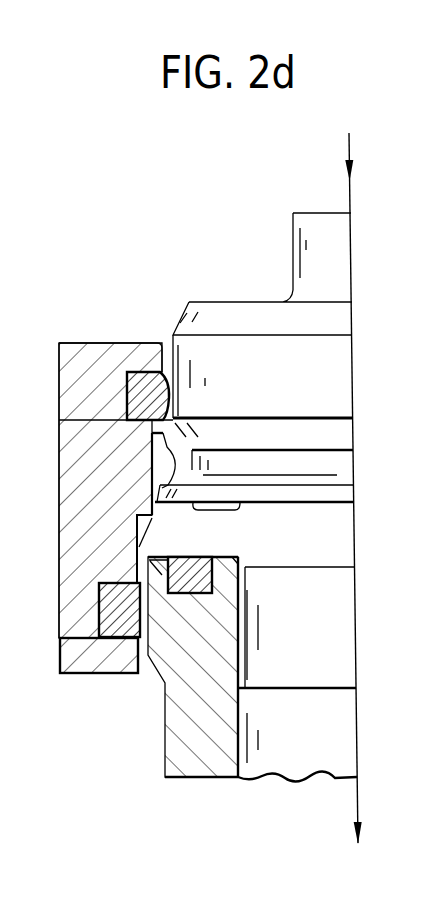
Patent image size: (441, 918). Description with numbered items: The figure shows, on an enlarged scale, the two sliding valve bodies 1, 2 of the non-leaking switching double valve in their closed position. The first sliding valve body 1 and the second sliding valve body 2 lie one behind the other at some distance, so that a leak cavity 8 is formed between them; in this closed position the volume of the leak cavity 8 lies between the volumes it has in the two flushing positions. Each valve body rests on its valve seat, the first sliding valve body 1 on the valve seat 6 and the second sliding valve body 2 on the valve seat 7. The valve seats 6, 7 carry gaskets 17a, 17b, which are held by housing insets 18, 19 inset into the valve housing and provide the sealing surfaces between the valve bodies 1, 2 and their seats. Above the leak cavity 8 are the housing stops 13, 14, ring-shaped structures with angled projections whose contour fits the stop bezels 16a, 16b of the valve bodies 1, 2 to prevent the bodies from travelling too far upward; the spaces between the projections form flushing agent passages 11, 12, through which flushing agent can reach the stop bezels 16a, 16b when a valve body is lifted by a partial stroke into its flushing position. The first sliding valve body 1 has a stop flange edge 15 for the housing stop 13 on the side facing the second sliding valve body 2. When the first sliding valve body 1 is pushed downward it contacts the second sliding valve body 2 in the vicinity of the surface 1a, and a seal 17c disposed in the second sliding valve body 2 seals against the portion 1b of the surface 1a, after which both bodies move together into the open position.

The first sliding valve body 1 is at (228, 383).
The surface 1a is at (137, 529).
The portion of surface 1b is at (150, 452).
The second sliding valve body 2 is at (205, 633).
The valve seat 6 is at (176, 443).
The valve seat 7 is at (165, 543).
The leak cavity 8 is at (298, 528).
The flushing agent passage 11 is at (177, 430).
The flushing agent passage 12 is at (140, 518).
The housing stop 13 is at (202, 457).
The housing stop 14 is at (143, 536).
The stop flange edge 15 is at (323, 493).
The stop bezel 16a is at (150, 468).
The stop bezel 16b is at (238, 569).
The gasket 17a is at (150, 373).
The gasket 17b is at (125, 673).
The seal 17c is at (200, 780).
The housing inset 18 is at (82, 673).
The housing inset 19 is at (87, 383).